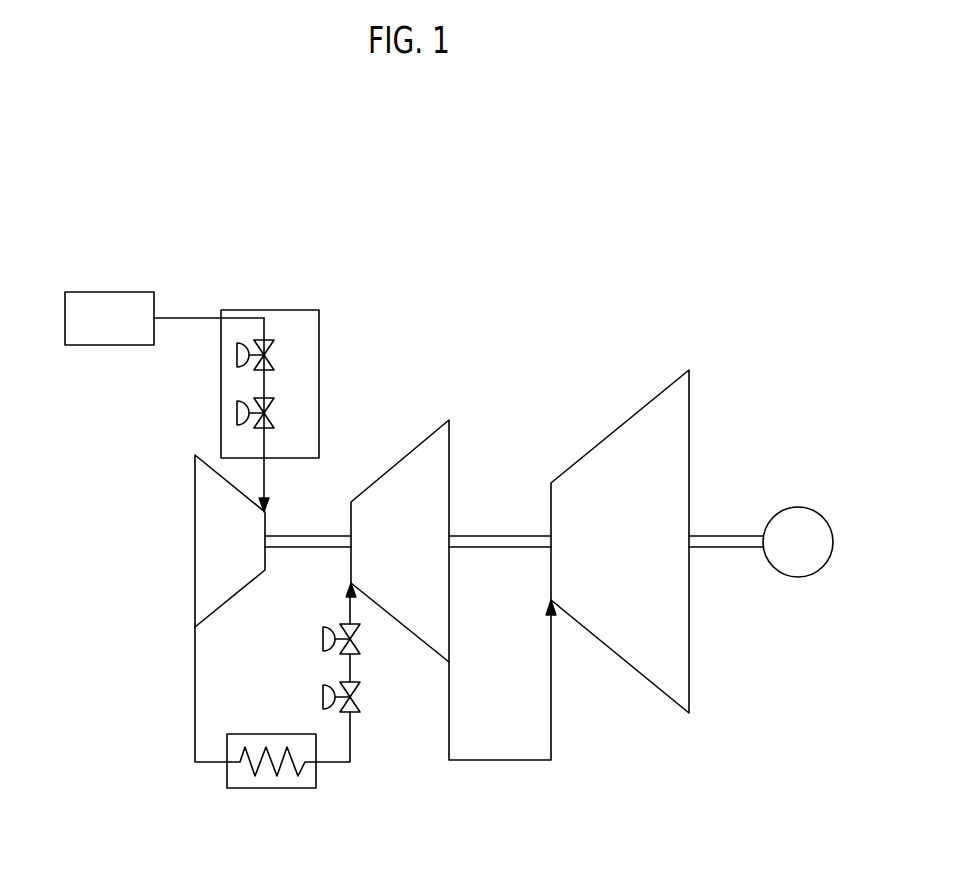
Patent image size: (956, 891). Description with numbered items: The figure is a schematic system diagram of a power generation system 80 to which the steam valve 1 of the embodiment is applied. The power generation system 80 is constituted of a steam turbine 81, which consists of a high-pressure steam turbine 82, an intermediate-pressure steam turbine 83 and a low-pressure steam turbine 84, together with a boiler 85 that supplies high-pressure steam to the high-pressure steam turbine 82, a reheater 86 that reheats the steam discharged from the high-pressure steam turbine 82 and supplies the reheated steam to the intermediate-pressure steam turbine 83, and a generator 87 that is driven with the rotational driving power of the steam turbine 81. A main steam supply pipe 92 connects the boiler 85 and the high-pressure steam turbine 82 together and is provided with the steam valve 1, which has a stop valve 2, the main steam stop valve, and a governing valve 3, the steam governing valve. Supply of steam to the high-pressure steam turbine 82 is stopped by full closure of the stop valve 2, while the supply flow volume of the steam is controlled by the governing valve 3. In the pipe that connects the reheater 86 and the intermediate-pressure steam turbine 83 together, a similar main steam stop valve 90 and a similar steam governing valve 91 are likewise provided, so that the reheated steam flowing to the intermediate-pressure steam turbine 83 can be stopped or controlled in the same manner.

The steam valve 1 is at (324, 377).
The stop valve 2 is at (237, 355).
The governing valve 3 is at (237, 413).
The power generation system 80 is at (727, 299).
The steam turbine 81 is at (521, 392).
The high-pressure steam turbine 82 is at (195, 571).
The intermediate-pressure steam turbine 83 is at (398, 461).
The low-pressure steam turbine 84 is at (626, 421).
The boiler 85 is at (112, 292).
The reheater 86 is at (306, 782).
The generator 87 is at (797, 507).
The main steam stop valve 90 is at (323, 697).
The steam governing valve 91 is at (323, 639).
The main steam supply pipe 92 is at (188, 318).